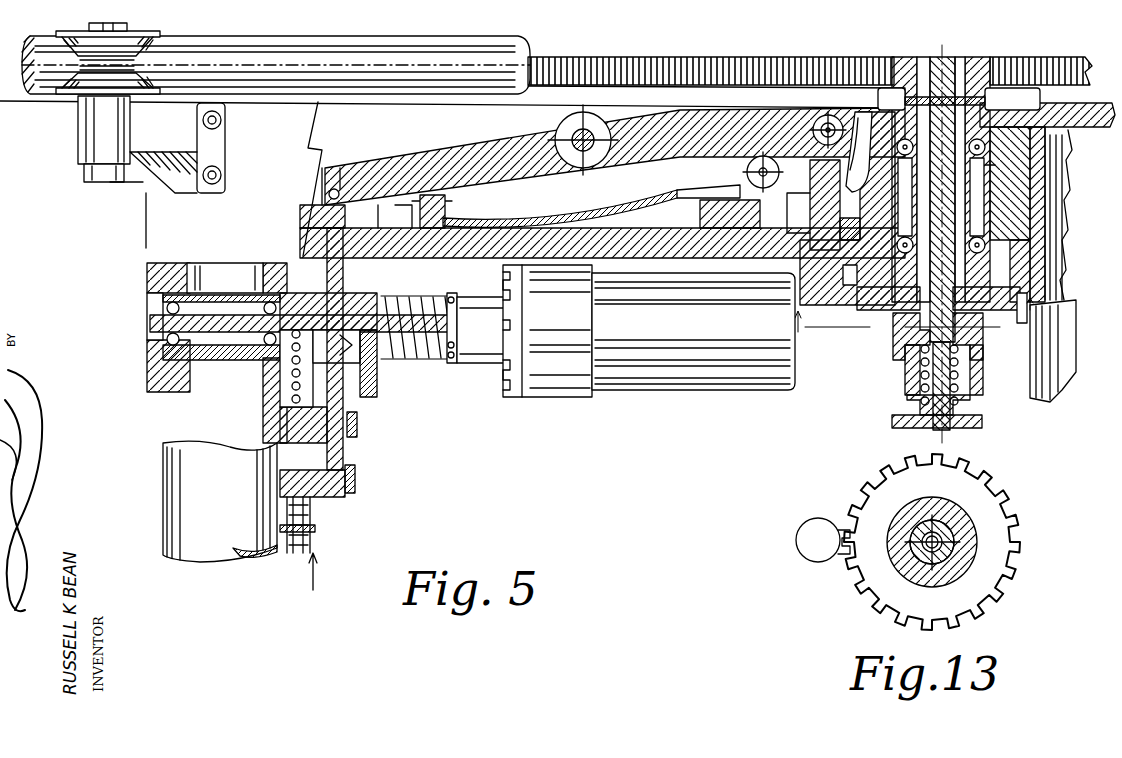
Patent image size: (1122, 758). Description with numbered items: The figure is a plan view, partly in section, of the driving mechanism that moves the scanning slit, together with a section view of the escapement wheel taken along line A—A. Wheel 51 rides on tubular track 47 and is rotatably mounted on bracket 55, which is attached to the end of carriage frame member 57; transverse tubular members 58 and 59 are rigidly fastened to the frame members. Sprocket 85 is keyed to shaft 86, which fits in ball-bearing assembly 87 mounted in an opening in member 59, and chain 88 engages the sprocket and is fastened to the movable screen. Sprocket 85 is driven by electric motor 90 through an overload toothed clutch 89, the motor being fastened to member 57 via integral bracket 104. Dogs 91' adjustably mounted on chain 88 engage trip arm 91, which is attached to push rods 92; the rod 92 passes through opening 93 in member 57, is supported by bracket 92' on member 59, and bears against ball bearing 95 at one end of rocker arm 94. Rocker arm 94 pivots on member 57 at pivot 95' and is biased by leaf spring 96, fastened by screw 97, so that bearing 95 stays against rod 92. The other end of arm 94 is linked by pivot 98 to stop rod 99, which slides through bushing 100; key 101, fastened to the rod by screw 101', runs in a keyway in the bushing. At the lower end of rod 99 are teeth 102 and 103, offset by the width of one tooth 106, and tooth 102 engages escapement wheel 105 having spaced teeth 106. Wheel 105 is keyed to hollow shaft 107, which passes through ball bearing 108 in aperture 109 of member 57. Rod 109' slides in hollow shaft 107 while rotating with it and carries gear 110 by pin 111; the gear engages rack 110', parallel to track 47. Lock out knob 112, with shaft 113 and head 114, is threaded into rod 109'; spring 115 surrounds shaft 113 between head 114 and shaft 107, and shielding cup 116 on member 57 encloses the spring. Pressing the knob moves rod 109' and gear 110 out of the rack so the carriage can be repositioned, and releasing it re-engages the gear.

In FIG. 5, the tubular track 47 is at (470, 57).
In FIG. 5, the wheel 51 is at (67, 92).
In FIG. 5, the bracket 55 is at (180, 154).
In FIG. 5, the frame member 57 is at (166, 246).
In FIG. 5, the transverse tubular member 58 is at (1046, 425).
In FIG. 5, the transverse tubular member 59 is at (172, 540).
In FIG. 5, the sprocket 85 is at (300, 362).
In FIG. 5, the shaft 86 is at (150, 329).
In FIG. 5, the ball-bearing assembly 87 is at (148, 357).
In FIG. 5, the chain 88 is at (296, 553).
In FIG. 5, the overload toothed clutch 89 is at (376, 392).
In FIG. 5, the electric motor 90 is at (676, 378).
In FIG. 5, the trip arm 91 is at (338, 482).
In FIG. 5, the dog 91' is at (319, 521).
In FIG. 5, the push rod 92 is at (362, 349).
In FIG. 5, the bracket 92' is at (373, 426).
In FIG. 5, the opening 93 is at (373, 263).
In FIG. 5, the rocker arm 94 is at (696, 118).
In FIG. 5, the ball bearing 95 is at (358, 167).
In FIG. 5, the pivot 95' is at (583, 129).
In FIG. 5, the leaf spring 96 is at (730, 193).
In FIG. 5, the screw 97 is at (422, 203).
In FIG. 5, the pivot 98 is at (827, 126).
In FIG. 5, the stop rod 99 is at (832, 328).
In FIG. 13, the stop rod 99 is at (812, 547).
In FIG. 5, the bushing 100 is at (836, 208).
In FIG. 5, the key 101 is at (860, 141).
In FIG. 5, the screw 101' is at (807, 205).
In FIG. 5, the tooth 102 is at (858, 308).
In FIG. 13, the tooth 102 is at (838, 527).
In FIG. 5, the tooth 103 is at (858, 275).
In FIG. 13, the tooth 103 is at (841, 552).
In FIG. 5, the bracket 104 is at (550, 390).
In FIG. 5, the escapement wheel 105 is at (892, 313).
In FIG. 13, the escapement wheel 105 is at (900, 592).
In FIG. 5, the teeth 106 is at (1020, 325).
In FIG. 13, the teeth 106 is at (992, 605).
In FIG. 5, the hollow shaft 107 is at (905, 345).
In FIG. 13, the hollow shaft 107 is at (955, 540).
In FIG. 5, the ball bearing 108 is at (1003, 150).
In FIG. 5, the aperture 109 is at (1030, 130).
In FIG. 13, the aperture 109 is at (957, 535).
In FIG. 5, the rod 109' is at (958, 234).
In FIG. 5, the gear 110 is at (934, 165).
In FIG. 5, the rack 110' is at (711, 53).
In FIG. 5, the pin 111 is at (905, 101).
In FIG. 5, the lock out knob 112 is at (962, 400).
In FIG. 5, the shaft 113 is at (947, 386).
In FIG. 13, the shaft 113 is at (910, 540).
In FIG. 5, the head 114 is at (920, 423).
In FIG. 5, the spring 115 is at (921, 378).
In FIG. 5, the shielding cup 116 is at (905, 362).
In FIG. 13, the shielding cup 116 is at (910, 570).